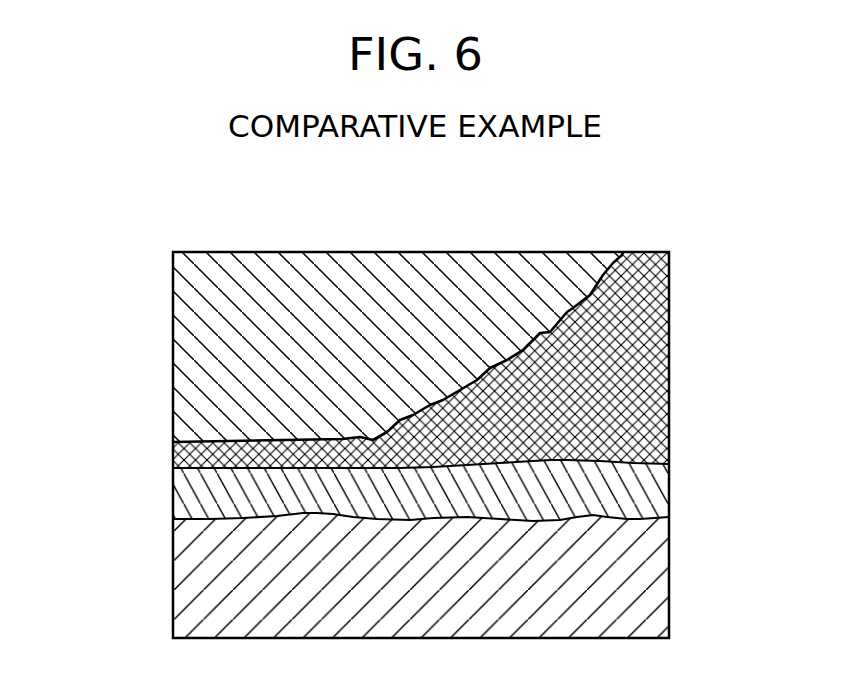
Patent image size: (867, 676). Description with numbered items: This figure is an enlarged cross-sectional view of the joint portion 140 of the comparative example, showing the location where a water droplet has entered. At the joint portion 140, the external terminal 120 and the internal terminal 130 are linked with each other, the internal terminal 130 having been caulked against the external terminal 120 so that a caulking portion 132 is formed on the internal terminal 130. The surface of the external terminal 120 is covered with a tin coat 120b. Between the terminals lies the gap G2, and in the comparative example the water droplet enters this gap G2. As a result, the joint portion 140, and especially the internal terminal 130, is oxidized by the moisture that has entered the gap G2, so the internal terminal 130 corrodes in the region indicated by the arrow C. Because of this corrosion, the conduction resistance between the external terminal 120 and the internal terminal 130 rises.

The joint portion 140 is at (121, 206).
The internal terminal 130 is at (157, 443).
The caulking portion 132 is at (94, 367).
The external terminal 120 is at (157, 446).
The tin coat 120b is at (669, 488).
The corrosion (arrow) C is at (691, 418).
The gap G2 is at (688, 462).